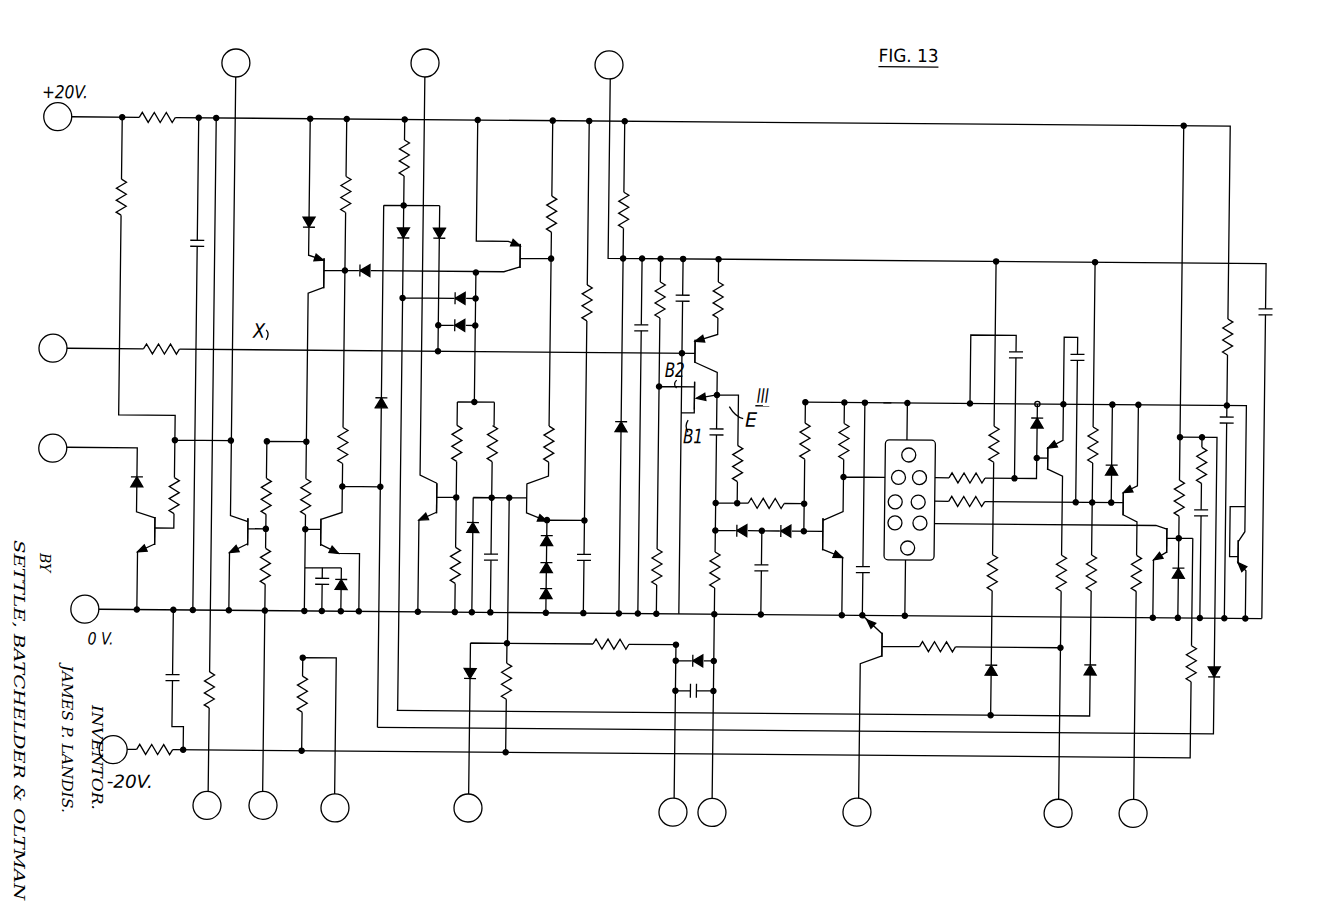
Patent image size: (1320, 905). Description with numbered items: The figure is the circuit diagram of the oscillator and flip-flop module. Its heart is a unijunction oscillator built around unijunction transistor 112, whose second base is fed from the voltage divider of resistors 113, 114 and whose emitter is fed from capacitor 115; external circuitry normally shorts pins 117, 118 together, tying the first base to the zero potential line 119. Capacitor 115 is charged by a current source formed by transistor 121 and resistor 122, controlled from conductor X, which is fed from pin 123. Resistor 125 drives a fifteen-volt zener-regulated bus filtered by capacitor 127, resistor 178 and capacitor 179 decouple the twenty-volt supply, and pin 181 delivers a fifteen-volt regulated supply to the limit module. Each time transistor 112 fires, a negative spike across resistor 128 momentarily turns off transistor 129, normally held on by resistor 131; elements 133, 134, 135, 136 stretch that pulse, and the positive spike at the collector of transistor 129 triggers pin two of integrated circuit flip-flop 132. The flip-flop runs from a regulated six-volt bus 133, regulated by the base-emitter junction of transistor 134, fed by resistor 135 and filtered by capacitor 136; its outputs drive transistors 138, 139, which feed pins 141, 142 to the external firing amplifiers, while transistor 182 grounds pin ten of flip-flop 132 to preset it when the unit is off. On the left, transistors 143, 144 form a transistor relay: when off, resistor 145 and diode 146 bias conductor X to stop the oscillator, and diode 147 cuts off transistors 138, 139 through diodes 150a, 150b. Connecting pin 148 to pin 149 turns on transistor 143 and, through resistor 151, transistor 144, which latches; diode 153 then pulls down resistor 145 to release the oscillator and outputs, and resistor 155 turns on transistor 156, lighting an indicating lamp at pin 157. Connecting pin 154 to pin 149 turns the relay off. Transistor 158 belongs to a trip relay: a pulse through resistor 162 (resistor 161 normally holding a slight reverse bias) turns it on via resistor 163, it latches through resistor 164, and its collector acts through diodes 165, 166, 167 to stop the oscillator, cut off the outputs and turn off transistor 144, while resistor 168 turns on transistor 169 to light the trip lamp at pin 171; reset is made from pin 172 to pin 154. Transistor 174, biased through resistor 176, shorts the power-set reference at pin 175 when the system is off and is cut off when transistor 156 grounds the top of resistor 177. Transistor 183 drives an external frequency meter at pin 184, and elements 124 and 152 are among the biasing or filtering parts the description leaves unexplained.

The resistor 178 is at (147, 110).
The resistor 176 is at (125, 190).
The capacitor 179 is at (192, 239).
The pin 157 is at (243, 66).
The pin 171 is at (432, 65).
The pin 181 is at (616, 65).
The resistor 145 is at (420, 154).
The second diode 147 is at (394, 226).
The diode 146 is at (440, 226).
The transistor 158 is at (530, 244).
The transistor 144 is at (324, 291).
The diode 167 is at (364, 281).
The diode 166 is at (466, 300).
The diode 165 is at (466, 327).
The resistor 125 is at (631, 193).
The voltage divider resistor 113 is at (667, 263).
The resistor 122 is at (722, 316).
The capacitor 127 is at (636, 335).
The diode 124 is at (612, 424).
The pin 123 is at (56, 344).
The pin 175 is at (55, 440).
The resistor 177 is at (172, 487).
The transistor 174 is at (148, 533).
The transistor 156 is at (232, 552).
The zero potential line 119 is at (154, 613).
The resistor 155 is at (265, 483).
The resistor 152 is at (305, 487).
The resistor 151 is at (342, 432).
The diode 153 is at (378, 408).
The transistor 143 is at (328, 530).
The resistor 168 is at (456, 427).
The transistor 169 is at (440, 484).
The resistor 163 is at (549, 424).
The resistor 164 is at (500, 439).
The transistor 121 is at (708, 354).
The unijunction transistor 112 is at (710, 388).
The capacitor 115 is at (742, 448).
The resistor 135 is at (766, 492).
The resistor 131 is at (838, 416).
The regulated +6 volt bus 133 is at (888, 396).
The integrated circuit flip-flop 132 is at (886, 436).
The transistor 129 is at (836, 554).
The resistor 128 is at (718, 586).
The transistor 134 is at (787, 554).
The capacitor 136 is at (765, 572).
The voltage divider resistor 114 is at (654, 601).
The transistor 138 is at (1044, 468).
The transistor 139 is at (1128, 500).
The transistor 182 is at (1166, 534).
The transistor 183 is at (887, 652).
The resistor 162 is at (616, 650).
The resistor 161 is at (516, 676).
The diode 150a is at (1002, 667).
The diode 150b is at (1101, 667).
The pin 148 is at (218, 819).
The pin 154 is at (276, 818).
The pin 149 is at (348, 820).
The pin 172 is at (482, 819).
The pin 117 is at (664, 818).
The pin 118 is at (725, 820).
The pin 184 is at (869, 820).
The pin 141 is at (1071, 820).
The pin 142 is at (1146, 819).